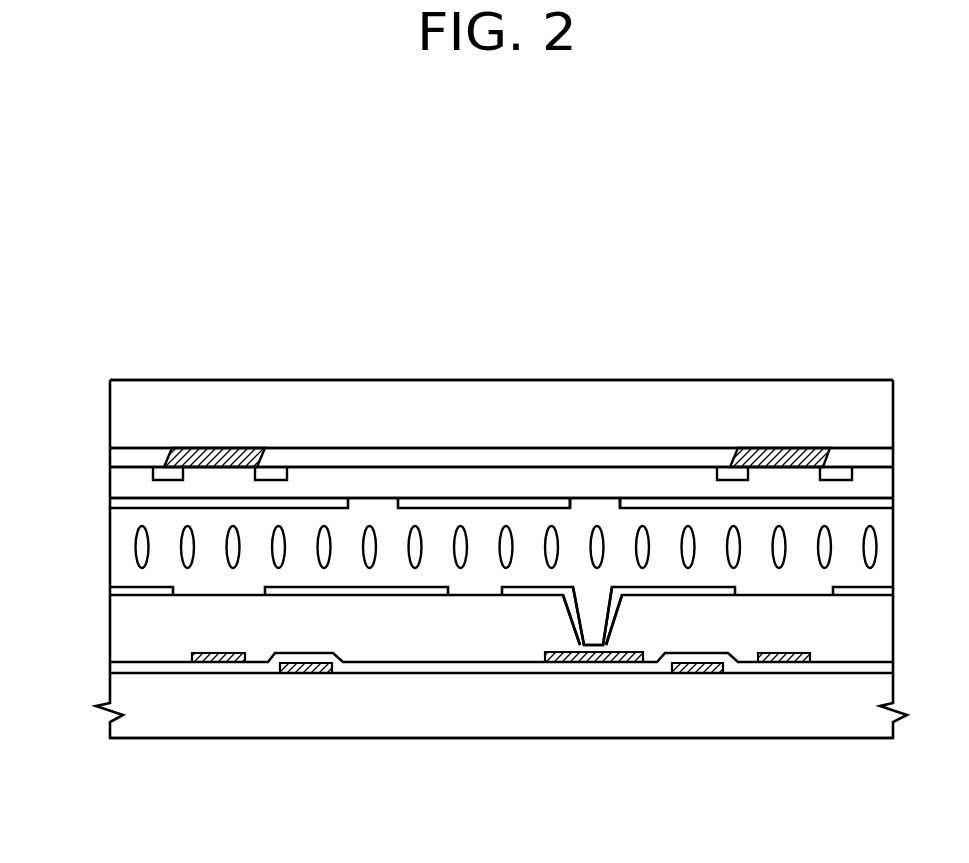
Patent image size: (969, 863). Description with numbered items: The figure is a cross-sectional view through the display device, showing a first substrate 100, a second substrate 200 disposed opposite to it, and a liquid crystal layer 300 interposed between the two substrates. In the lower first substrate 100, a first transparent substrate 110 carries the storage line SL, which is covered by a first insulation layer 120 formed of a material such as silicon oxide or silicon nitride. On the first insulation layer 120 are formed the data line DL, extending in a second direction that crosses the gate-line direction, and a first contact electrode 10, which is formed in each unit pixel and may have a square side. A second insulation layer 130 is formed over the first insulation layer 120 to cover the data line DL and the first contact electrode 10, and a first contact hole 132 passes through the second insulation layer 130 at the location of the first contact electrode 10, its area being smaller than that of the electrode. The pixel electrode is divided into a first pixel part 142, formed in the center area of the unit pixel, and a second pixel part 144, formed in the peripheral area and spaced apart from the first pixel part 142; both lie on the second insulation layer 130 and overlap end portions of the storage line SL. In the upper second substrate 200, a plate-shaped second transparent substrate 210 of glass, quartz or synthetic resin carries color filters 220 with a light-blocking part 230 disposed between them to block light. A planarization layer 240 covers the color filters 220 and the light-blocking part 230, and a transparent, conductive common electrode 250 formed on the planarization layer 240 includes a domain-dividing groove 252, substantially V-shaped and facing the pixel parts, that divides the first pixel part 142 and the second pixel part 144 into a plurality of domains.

The second substrate 200 is at (92, 382).
The second transparent substrate 210 is at (433, 400).
The color filters 220 is at (351, 452).
The light-blocking part 230 is at (213, 452).
The planarization layer 240 is at (520, 480).
The common electrode 250 is at (682, 480).
The domain-dividing groove 252 is at (595, 506).
The liquid crystal layer 300 is at (124, 547).
The first substrate 100 is at (92, 585).
The first transparent substrate 110 is at (462, 722).
The first insulation layer 120 is at (412, 665).
The second insulation layer 130 is at (853, 643).
The first contact hole 132 is at (566, 658).
The first pixel part 142 is at (520, 591).
The second pixel part 144 is at (357, 596).
The first contact electrode 10 is at (597, 619).
The storage line SL is at (697, 671).
The data line DL is at (778, 664).